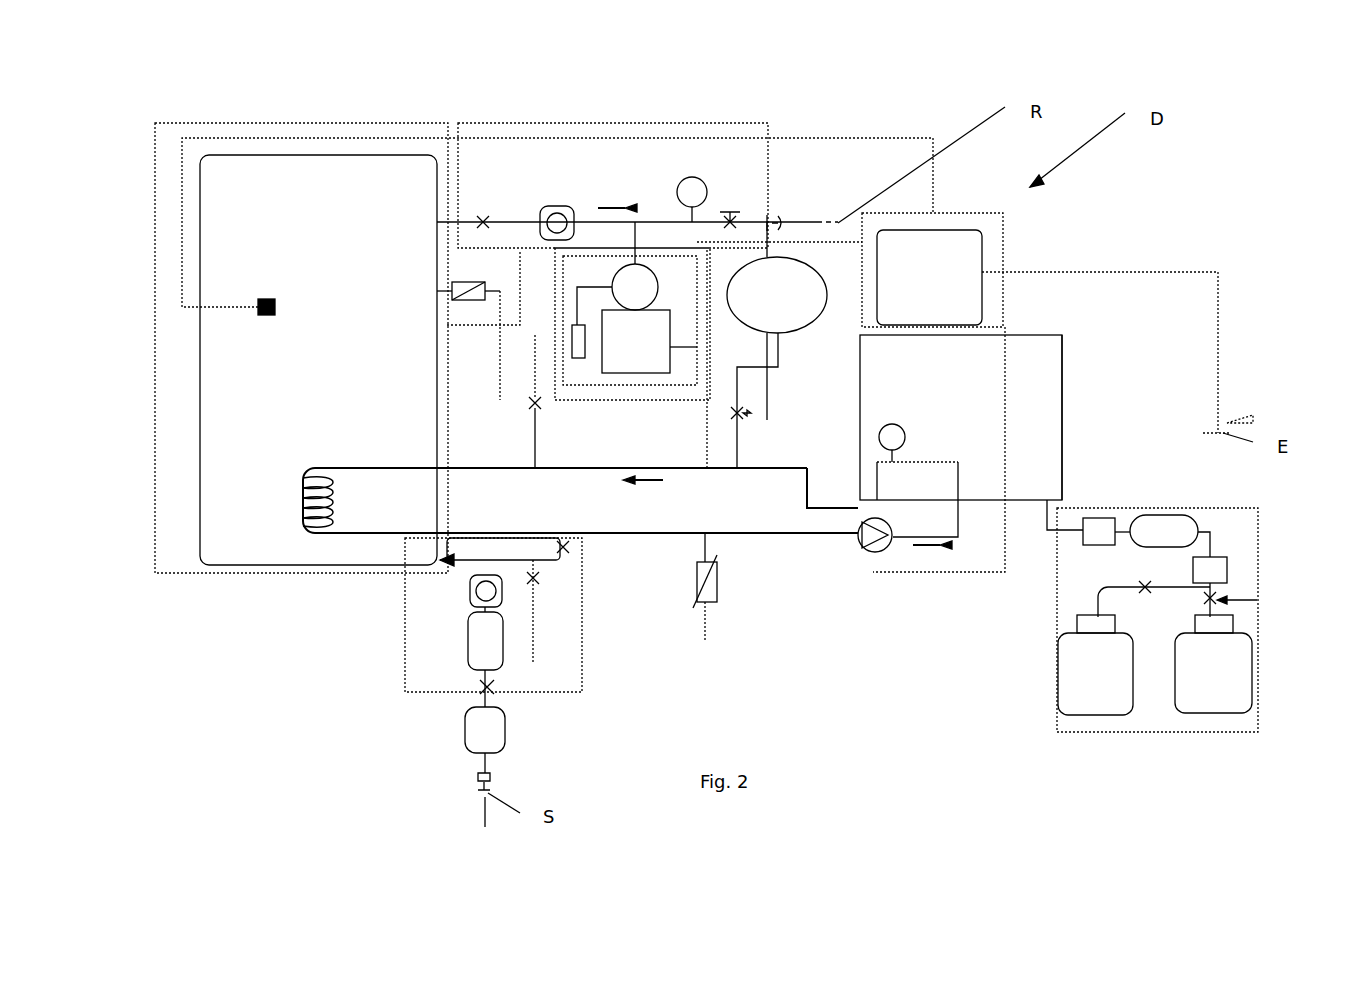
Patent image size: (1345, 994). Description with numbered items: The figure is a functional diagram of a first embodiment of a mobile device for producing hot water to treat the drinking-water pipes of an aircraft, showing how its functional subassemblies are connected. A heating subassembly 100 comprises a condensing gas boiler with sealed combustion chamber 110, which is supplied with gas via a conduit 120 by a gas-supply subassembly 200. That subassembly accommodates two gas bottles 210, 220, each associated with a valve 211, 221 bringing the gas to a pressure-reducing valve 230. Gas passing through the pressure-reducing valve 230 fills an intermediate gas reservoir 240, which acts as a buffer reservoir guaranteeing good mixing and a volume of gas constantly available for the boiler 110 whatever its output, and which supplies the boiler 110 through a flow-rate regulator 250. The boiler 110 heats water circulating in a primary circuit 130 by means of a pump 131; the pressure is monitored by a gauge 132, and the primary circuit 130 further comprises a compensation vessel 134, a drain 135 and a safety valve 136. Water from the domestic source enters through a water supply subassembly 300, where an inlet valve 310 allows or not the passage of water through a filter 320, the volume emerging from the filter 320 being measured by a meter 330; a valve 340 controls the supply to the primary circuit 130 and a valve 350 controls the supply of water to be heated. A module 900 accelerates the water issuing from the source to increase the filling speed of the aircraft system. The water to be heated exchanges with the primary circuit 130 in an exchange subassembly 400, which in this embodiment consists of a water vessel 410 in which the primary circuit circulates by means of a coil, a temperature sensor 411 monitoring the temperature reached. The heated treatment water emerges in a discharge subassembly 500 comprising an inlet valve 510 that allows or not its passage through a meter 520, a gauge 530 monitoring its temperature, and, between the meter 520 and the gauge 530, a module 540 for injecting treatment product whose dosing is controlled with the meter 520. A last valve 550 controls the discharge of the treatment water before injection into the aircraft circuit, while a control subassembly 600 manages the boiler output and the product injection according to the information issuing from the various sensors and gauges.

The heating subassembly 100 is at (1062, 348).
The condensing gas boiler with sealed combustion chamber 110 is at (1047, 438).
The conduit 120 is at (1047, 530).
The primary circuit 130 is at (765, 537).
The pump 131 is at (870, 550).
The gauge 132 is at (900, 428).
The compensation vessel 134 is at (777, 345).
The drain 135 is at (545, 410).
The safety valve 136 is at (708, 597).
The gas-supply subassembly 200 is at (1103, 732).
The gas bottle 210 is at (1072, 677).
The valve 211 is at (1142, 588).
The gas bottle 220 is at (1213, 703).
The valve 221 is at (1260, 604).
The pressure-reducing valve 230 is at (1220, 572).
The intermediate gas reservoir 240 is at (1177, 532).
The flow-rate regulator 250 is at (1095, 520).
The water supply subassembly 300 is at (438, 685).
The inlet valve 310 is at (495, 688).
The filter 320 is at (470, 652).
The meter 330 is at (470, 597).
The valve 340 is at (568, 553).
The valve 350 is at (453, 560).
The exchange subassembly 400 is at (155, 445).
The water vessel 410 is at (200, 378).
The temperature sensor 411 is at (258, 307).
The discharge subassembly 500 is at (487, 123).
The inlet valve 510 is at (484, 219).
The meter 520 is at (557, 220).
The gauge 530 is at (692, 190).
The module for injecting treatment product 540 is at (732, 221).
The last valve 550 is at (734, 222).
The control subassembly 600 is at (1003, 247).
The module for accelerating the water 900 is at (480, 737).